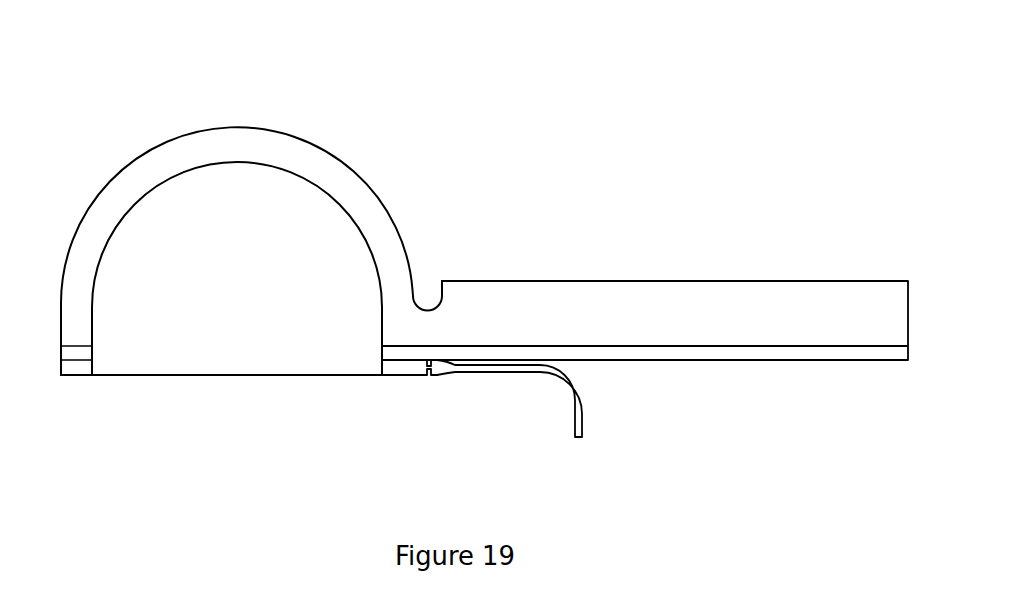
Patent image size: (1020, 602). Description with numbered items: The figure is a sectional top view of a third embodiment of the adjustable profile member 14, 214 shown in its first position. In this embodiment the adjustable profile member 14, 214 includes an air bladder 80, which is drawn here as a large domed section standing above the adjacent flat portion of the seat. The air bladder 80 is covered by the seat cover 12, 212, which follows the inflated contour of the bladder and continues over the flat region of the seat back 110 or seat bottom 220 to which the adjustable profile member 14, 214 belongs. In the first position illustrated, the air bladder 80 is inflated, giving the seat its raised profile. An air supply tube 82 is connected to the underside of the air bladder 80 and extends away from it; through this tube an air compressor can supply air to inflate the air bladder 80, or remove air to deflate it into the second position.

The seat cover 12 is at (220, 128).
The seat cover 212 is at (251, 199).
The adjustable profile member 14 is at (317, 220).
The adjustable profile member 214 is at (410, 158).
The air bladder 80 is at (357, 199).
The air supply tube 82 is at (580, 392).
The seat back 110 is at (645, 264).
The seat bottom 220 is at (703, 258).